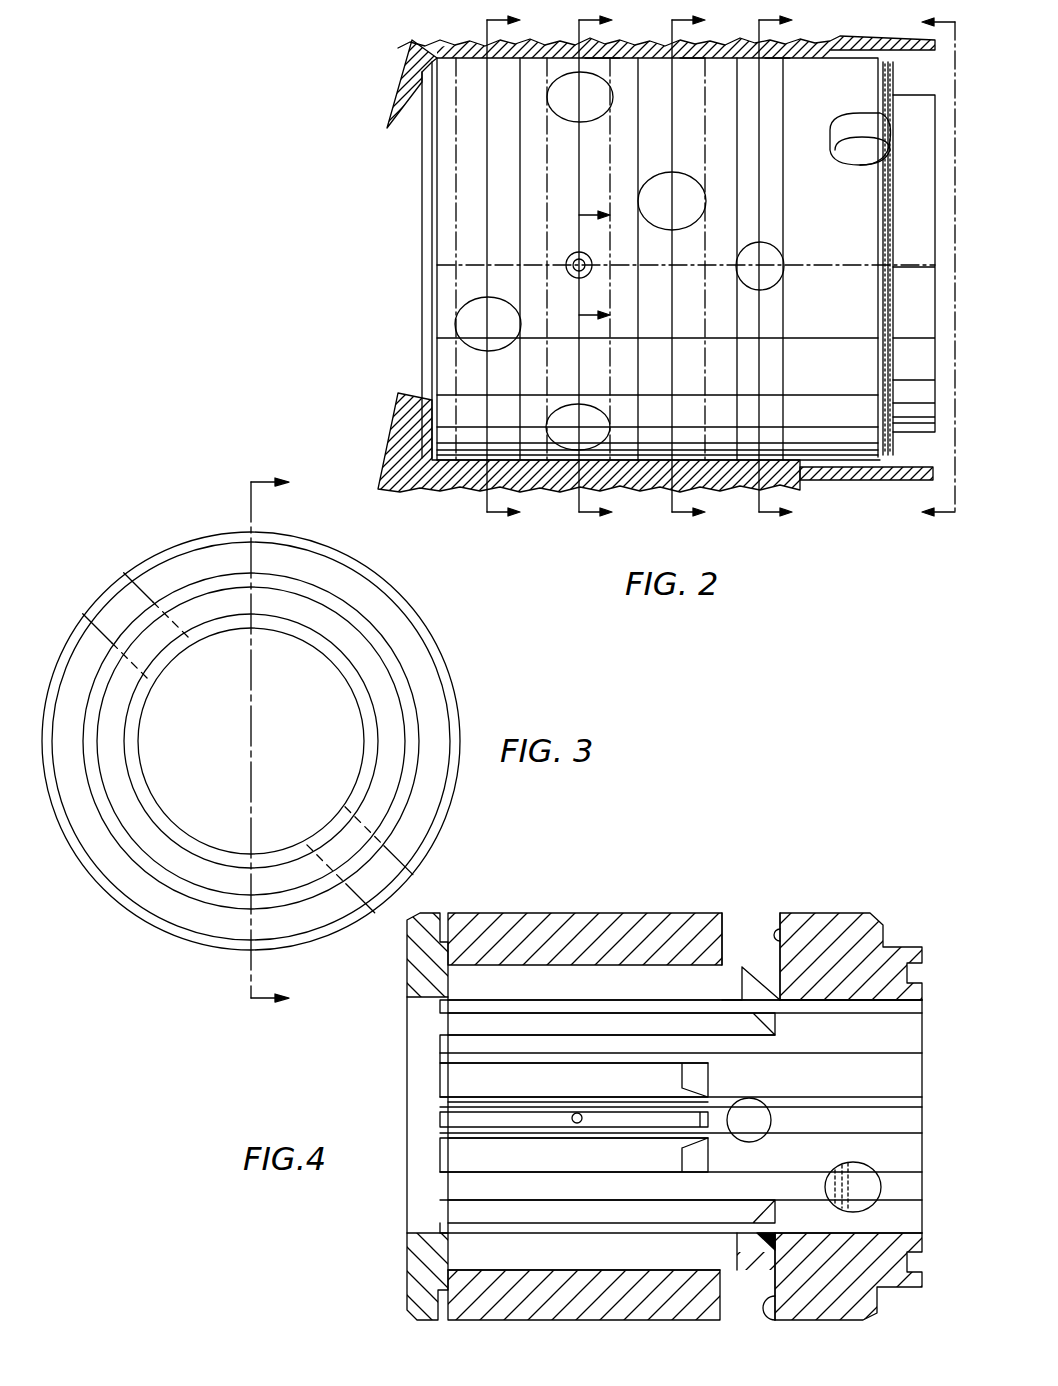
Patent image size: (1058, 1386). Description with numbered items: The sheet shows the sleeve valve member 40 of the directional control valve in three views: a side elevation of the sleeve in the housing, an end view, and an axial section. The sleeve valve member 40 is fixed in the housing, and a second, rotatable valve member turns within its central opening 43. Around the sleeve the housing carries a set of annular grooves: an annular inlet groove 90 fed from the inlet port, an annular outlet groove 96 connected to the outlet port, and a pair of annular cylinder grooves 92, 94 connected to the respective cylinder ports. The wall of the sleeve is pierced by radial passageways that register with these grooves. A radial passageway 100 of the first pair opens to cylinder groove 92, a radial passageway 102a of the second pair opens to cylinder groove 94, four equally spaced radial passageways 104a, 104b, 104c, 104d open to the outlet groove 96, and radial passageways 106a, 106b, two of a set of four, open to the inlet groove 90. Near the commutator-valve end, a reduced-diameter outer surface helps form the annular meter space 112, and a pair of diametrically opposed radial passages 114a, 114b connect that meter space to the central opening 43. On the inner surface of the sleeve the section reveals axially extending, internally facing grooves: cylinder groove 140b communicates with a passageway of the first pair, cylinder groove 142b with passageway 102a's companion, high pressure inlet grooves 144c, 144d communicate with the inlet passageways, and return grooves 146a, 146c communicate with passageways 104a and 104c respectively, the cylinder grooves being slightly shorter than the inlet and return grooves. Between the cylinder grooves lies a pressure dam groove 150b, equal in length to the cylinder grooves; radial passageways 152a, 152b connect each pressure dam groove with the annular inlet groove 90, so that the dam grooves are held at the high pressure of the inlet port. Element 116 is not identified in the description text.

In FIG. 2, the sleeve valve member 40 is at (397, 358).
In FIG. 3, the sleeve valve member 40 is at (462, 652).
In FIG. 4, the sleeve valve member 40 is at (522, 903).
In FIG. 3, the central opening 43 is at (366, 748).
In FIG. 4, the central opening 43 is at (845, 1006).
In FIG. 2, the annular inlet groove 90 is at (600, 52).
In FIG. 2, the annular cylinder groove 92 is at (690, 57).
In FIG. 2, the annular cylinder groove 94 is at (470, 48).
In FIG. 2, the annular outlet groove 96 is at (778, 50).
In FIG. 2, the radial passageway 100 is at (696, 190).
In FIG. 2, the radial passageway 102a is at (508, 314).
In FIG. 4, the radial passageway 104a is at (778, 930).
In FIG. 2, the radial passageway 104b is at (776, 268).
In FIG. 4, the radial passageway 104c is at (770, 1322).
In FIG. 4, the radial passageway 104d is at (766, 1128).
In FIG. 2, the radial passageway 106a is at (597, 110).
In FIG. 2, the radial passageway 106b is at (597, 415).
In FIG. 2, the annular meter space 112 is at (906, 455).
In FIG. 2, the radial passage 114a is at (855, 128).
In FIG. 3, the radial passage 114a is at (135, 592).
In FIG. 3, the radial passage 114b is at (392, 863).
In FIG. 4, the radial passage 114b is at (880, 1180).
In FIG. 2, the end flange 116 is at (900, 95).
In FIG. 4, the cylinder groove 140b is at (472, 1172).
In FIG. 4, the cylinder groove 142b is at (478, 1065).
In FIG. 4, the high pressure inlet groove 144c is at (545, 1212).
In FIG. 4, the high pressure inlet groove 144d is at (548, 1018).
In FIG. 4, the return groove 146a is at (633, 968).
In FIG. 4, the return groove 146c is at (632, 1262).
In FIG. 4, the pressure dam groove 150b is at (676, 1116).
In FIG. 2, the radial passageway 152a is at (592, 265).
In FIG. 4, the radial passageway 152b is at (582, 1112).